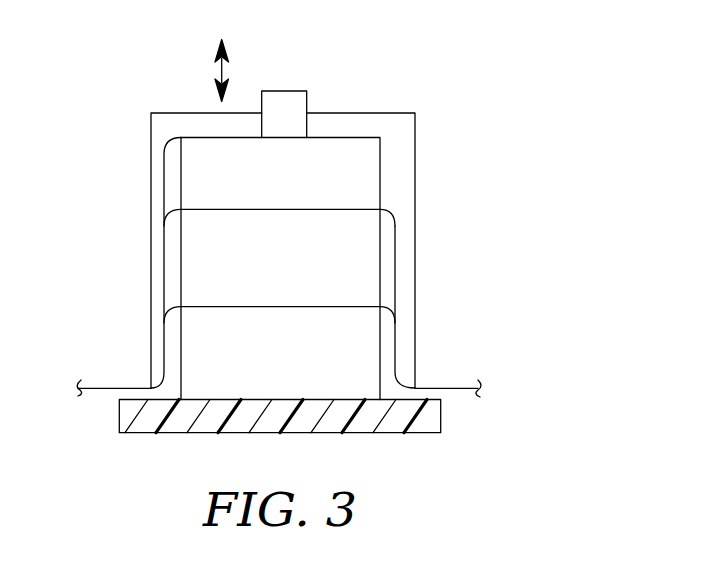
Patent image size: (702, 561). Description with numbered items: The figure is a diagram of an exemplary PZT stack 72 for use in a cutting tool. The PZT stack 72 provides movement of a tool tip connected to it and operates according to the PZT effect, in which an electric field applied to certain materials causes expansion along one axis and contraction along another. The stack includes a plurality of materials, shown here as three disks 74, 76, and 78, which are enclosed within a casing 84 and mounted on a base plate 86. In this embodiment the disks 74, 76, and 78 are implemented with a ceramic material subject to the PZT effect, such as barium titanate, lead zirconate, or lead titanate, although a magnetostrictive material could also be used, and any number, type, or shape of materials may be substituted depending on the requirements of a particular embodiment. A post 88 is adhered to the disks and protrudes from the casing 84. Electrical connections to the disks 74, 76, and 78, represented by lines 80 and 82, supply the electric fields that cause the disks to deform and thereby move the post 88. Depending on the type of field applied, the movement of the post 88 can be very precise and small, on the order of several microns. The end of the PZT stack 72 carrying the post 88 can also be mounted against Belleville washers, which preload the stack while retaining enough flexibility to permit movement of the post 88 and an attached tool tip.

The PZT stack 72 is at (430, 69).
The disk 74 is at (363, 169).
The disk 76 is at (363, 249).
The disk 78 is at (363, 343).
The line 80 is at (463, 392).
The line 82 is at (110, 387).
The casing 84 is at (151, 208).
The base plate 86 is at (148, 420).
The post 88 is at (307, 100).